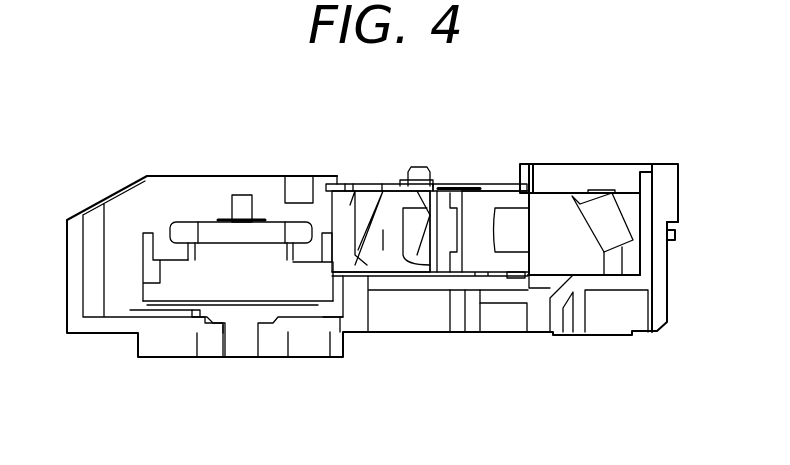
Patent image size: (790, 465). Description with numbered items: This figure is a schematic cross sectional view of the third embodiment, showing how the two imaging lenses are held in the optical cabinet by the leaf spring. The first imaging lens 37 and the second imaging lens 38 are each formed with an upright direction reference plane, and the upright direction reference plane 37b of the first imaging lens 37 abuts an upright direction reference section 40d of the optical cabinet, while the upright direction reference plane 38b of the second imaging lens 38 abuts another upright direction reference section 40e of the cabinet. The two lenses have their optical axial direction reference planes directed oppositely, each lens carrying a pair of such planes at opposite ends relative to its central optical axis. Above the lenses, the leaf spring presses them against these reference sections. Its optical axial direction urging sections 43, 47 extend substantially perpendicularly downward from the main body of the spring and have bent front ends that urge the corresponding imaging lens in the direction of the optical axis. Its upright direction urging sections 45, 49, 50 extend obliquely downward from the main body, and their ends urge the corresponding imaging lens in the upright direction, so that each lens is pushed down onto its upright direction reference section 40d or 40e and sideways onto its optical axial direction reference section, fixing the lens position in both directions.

The first imaging lens 37 is at (383, 250).
The upright direction reference plane 37b is at (340, 318).
The second imaging lens 38 is at (485, 212).
The upright direction reference plane 38b is at (495, 276).
The upright direction reference section 40d is at (363, 285).
The upright direction reference section 40e is at (473, 276).
The optical axial direction urging section 43 is at (375, 190).
The upright direction urging section 45 is at (337, 185).
The optical axial direction urging section 47 is at (433, 190).
The upright direction urging section 49 is at (462, 190).
The upright direction urging section 50 is at (395, 182).